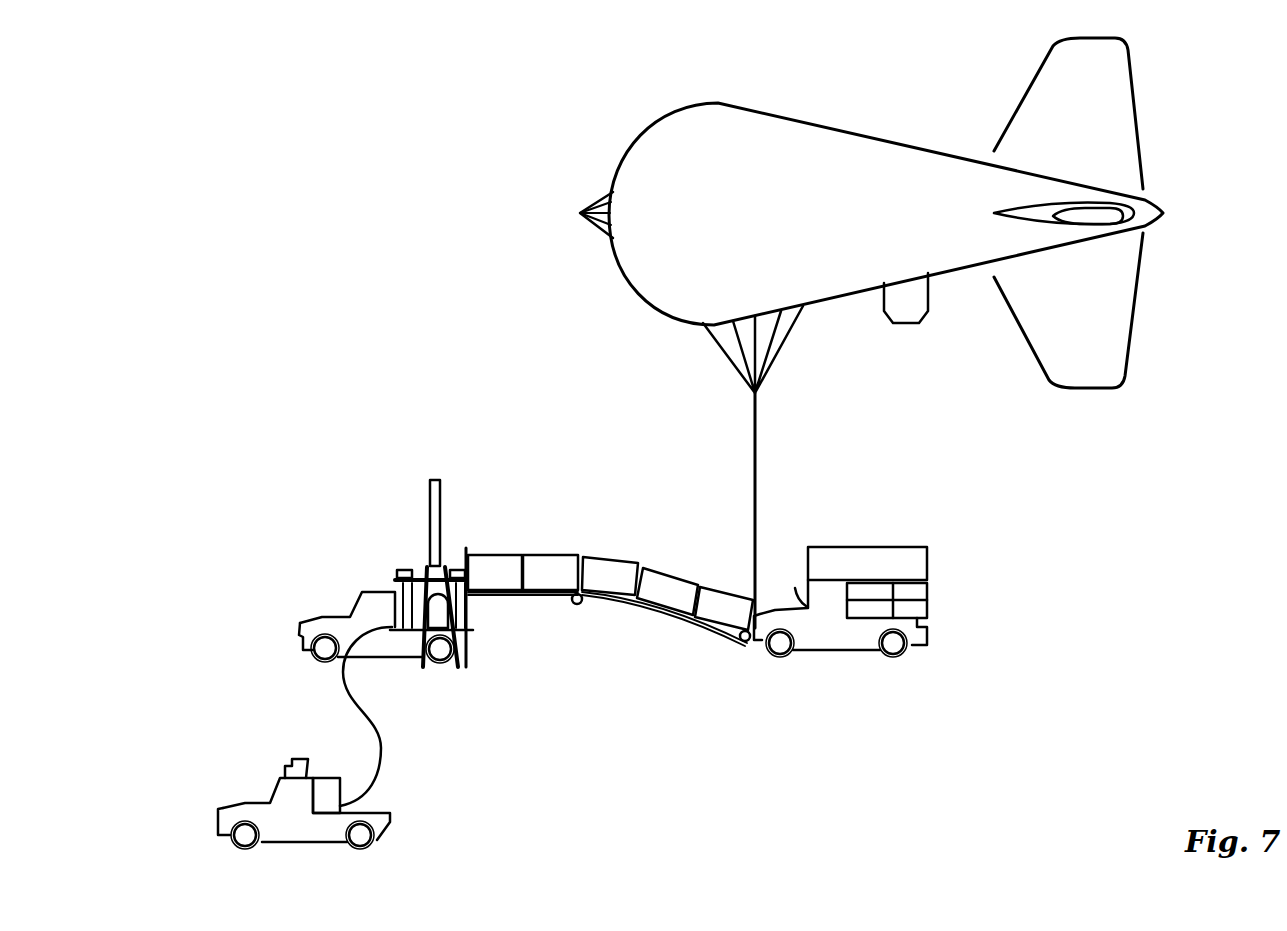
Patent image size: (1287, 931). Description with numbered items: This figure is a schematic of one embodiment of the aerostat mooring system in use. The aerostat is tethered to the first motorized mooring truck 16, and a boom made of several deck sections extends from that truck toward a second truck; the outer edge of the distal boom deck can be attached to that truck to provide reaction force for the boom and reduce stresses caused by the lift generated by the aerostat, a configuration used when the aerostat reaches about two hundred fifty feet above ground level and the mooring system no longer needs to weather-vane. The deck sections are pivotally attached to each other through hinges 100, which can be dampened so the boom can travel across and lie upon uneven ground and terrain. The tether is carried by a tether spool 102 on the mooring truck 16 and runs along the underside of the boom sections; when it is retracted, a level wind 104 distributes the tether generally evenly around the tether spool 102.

The first motorized mooring truck 16 is at (302, 633).
The hinges 100 is at (522, 595).
The tether spool 102 is at (397, 586).
The level wind 104 is at (580, 603).